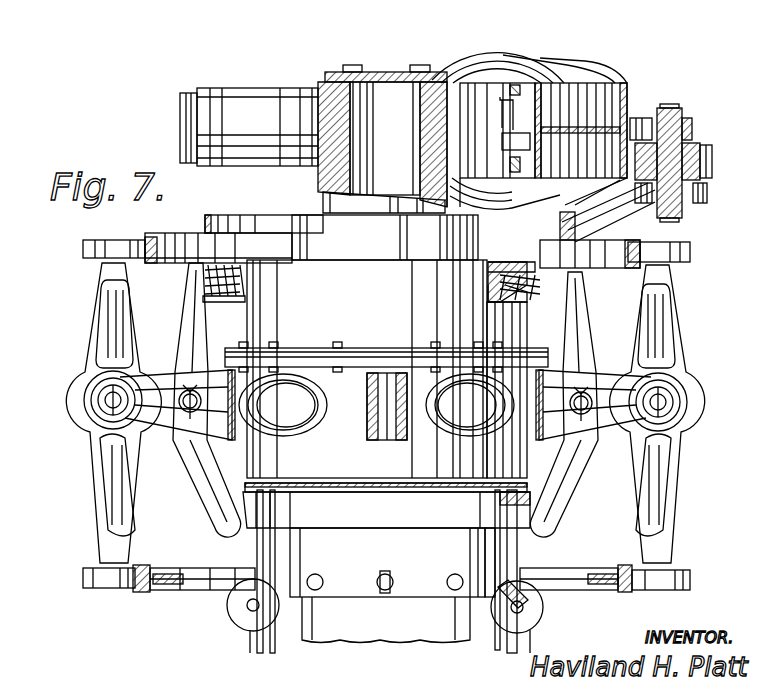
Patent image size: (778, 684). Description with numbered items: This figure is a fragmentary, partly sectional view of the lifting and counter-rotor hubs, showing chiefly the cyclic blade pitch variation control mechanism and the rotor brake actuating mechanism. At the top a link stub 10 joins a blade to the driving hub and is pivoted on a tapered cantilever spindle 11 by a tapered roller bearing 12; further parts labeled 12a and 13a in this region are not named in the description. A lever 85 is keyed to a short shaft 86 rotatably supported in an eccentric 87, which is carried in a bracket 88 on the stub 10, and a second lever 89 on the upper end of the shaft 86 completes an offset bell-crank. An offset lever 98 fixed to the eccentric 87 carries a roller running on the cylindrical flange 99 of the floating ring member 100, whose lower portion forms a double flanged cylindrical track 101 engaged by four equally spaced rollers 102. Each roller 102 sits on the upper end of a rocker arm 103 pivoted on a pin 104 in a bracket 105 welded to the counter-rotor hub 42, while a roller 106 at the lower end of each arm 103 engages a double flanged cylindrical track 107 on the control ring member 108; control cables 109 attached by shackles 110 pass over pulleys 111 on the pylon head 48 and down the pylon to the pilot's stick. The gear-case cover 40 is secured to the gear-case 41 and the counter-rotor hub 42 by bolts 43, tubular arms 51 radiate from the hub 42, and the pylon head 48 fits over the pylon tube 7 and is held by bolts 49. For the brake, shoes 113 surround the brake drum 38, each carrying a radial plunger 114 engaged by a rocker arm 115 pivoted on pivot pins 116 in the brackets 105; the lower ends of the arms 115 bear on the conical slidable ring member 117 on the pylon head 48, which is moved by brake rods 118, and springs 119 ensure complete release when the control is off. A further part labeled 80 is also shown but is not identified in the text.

The pylon tube 7 is at (325, 636).
The link stub 10 is at (608, 95).
The tapered cantilever spindle 11 is at (258, 92).
The tapered roller bearing 12 is at (322, 184).
The housing part 12a is at (508, 96).
The housing part 13a is at (525, 140).
The brake drum 38 is at (488, 270).
The gear-case cover 40 is at (262, 320).
The gear-case 41 is at (246, 348).
The counter-rotor hub 42 is at (250, 465).
The bolts 43 is at (430, 350).
The pylon head 48 is at (372, 493).
The bolts 49 is at (303, 596).
The tubular arms 51 is at (310, 432).
The bar 80 is at (472, 566).
The lever 85 is at (690, 205).
The short shaft 86 is at (680, 218).
The eccentric 87 is at (700, 145).
The bracket 88 is at (713, 163).
The second lever 89 is at (693, 125).
The offset lever 98 is at (660, 218).
The cylindrical flange 99 is at (205, 226).
The floating ring member 100 is at (168, 238).
The double flanged cylindrical track 101 is at (128, 240).
The rollers 102 is at (86, 242).
The rocker arm 103 is at (97, 318).
The pin 104 is at (102, 405).
The bracket 105 is at (160, 388).
The roller 106 is at (84, 578).
The double flanged cylindrical track 107 is at (143, 565).
The control ring member 108 is at (215, 585).
The control cables 109 is at (280, 652).
The shackles 110 is at (170, 586).
The pulleys 111 is at (240, 618).
The brake shoes 113 is at (522, 298).
The plunger 114 is at (535, 300).
The rocker arm 115 is at (185, 318).
The pivot pins 116 is at (188, 415).
The slidable ring member 117 is at (347, 512).
The brake rods 118 is at (258, 645).
The springs 119 is at (230, 278).